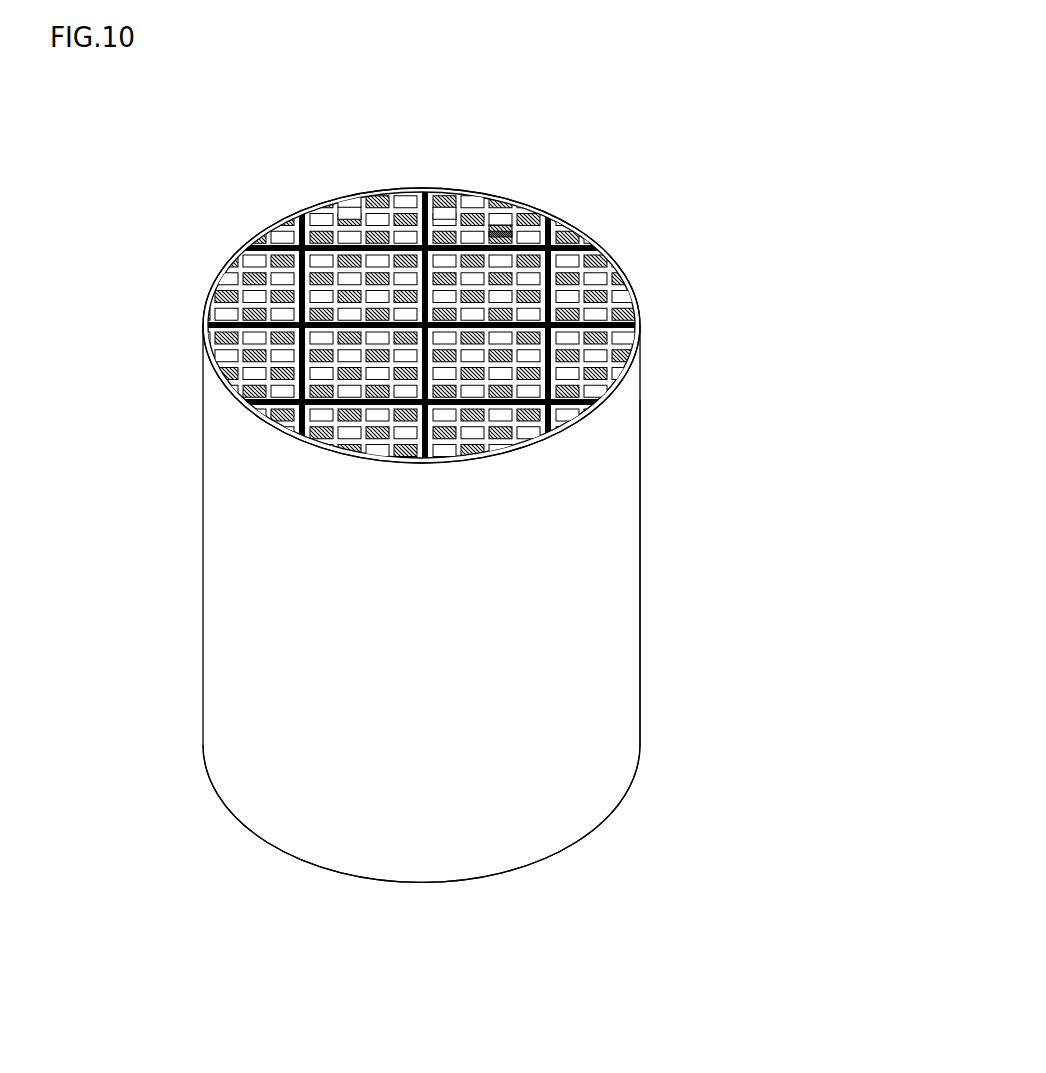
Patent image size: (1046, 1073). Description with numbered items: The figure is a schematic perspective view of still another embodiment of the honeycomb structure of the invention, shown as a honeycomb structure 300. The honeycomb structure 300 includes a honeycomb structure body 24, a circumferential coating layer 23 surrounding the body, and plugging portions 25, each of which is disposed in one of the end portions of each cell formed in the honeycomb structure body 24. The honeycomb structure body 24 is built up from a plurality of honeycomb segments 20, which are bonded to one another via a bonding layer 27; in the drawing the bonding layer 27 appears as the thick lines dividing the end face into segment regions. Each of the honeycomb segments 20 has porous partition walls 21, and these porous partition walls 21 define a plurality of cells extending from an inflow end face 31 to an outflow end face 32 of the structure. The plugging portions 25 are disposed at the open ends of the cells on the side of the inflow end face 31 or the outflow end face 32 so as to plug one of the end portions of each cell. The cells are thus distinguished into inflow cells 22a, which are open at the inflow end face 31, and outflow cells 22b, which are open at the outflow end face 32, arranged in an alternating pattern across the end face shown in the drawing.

The honeycomb structure 300 is at (705, 50).
The honeycomb segment 20 is at (593, 285).
The porous partition wall 21 is at (366, 214).
The inflow cell 22a is at (443, 222).
The outflow cell 22b is at (503, 235).
The circumferential coating layer 23 is at (615, 467).
The honeycomb structure body 24 is at (645, 508).
The plugging portion 25 is at (322, 242).
The bonding layer 27 is at (632, 325).
The inflow end face 31 is at (243, 241).
The outflow end face 32 is at (233, 817).